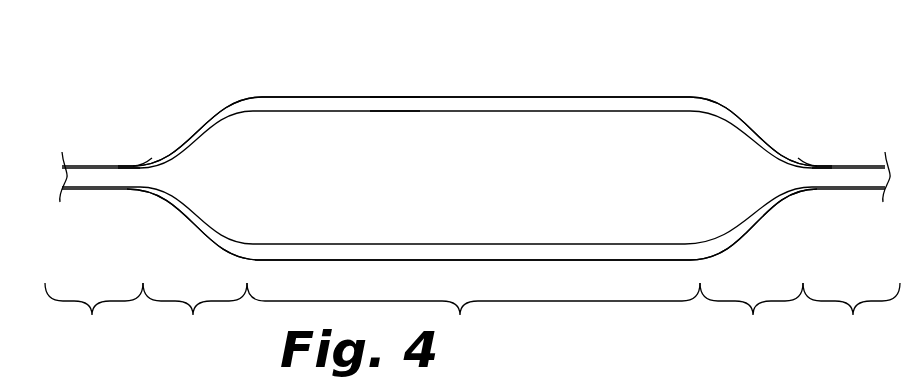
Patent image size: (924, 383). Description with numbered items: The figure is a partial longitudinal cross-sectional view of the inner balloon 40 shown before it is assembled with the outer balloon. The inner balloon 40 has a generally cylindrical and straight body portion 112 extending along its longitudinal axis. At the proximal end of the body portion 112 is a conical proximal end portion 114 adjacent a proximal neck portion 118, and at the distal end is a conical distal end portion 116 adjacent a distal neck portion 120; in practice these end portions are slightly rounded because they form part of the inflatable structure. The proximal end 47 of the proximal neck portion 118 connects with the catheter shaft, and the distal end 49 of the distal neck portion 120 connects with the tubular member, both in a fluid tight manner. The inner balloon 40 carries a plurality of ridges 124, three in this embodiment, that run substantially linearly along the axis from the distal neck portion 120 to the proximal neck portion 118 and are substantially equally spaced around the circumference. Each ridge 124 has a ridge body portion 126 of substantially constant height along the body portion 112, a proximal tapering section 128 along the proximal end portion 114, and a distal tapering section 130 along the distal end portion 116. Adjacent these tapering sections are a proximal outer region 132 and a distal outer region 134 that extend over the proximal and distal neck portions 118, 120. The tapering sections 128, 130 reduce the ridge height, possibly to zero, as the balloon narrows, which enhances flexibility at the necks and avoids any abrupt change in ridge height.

The inner balloon 40 is at (627, 148).
The proximal end 47 is at (78, 165).
The distal end 49 is at (831, 155).
The body portion 112 is at (473, 315).
The proximal end portion 114 is at (195, 315).
The distal end portion 116 is at (751, 315).
The proximal neck portion 118 is at (94, 315).
The distal neck portion 120 is at (851, 315).
The ridge 124 is at (398, 96).
The ridge body portion 126 is at (518, 107).
The proximal tapering section 128 is at (240, 108).
The distal tapering section 130 is at (707, 107).
The proximal outer region 132 is at (132, 165).
The distal outer region 134 is at (815, 167).